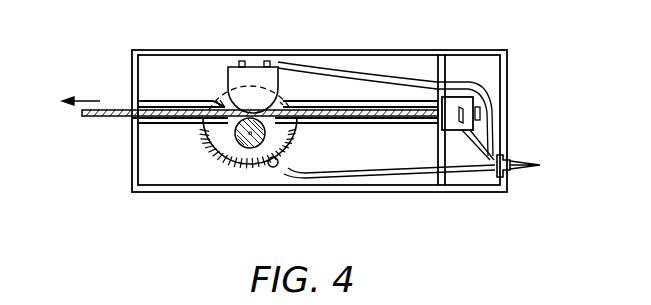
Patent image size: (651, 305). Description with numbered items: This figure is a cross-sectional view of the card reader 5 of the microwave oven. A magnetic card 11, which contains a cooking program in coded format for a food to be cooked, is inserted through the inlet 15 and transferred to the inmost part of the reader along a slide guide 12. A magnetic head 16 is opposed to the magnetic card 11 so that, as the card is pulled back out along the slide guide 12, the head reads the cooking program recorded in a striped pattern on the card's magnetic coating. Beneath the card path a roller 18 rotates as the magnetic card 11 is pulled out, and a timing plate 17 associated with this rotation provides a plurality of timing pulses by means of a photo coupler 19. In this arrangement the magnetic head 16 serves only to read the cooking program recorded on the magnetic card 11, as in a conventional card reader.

The card reader 5 is at (413, 50).
The magnetic card 11 is at (101, 109).
The slide guide 12 is at (178, 119).
The inlet 15 is at (133, 121).
The magnetic head 16 is at (253, 86).
The timing plate 17 is at (253, 179).
The roller 18 is at (243, 146).
The photo coupler 19 is at (273, 168).